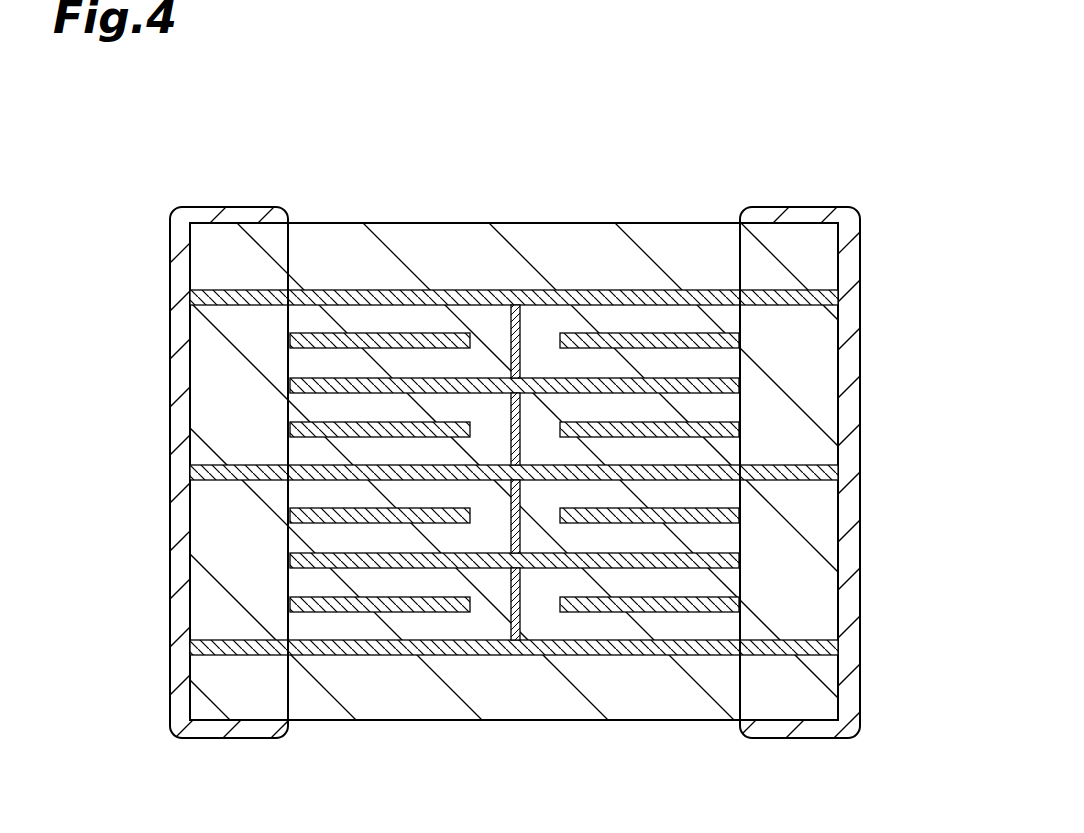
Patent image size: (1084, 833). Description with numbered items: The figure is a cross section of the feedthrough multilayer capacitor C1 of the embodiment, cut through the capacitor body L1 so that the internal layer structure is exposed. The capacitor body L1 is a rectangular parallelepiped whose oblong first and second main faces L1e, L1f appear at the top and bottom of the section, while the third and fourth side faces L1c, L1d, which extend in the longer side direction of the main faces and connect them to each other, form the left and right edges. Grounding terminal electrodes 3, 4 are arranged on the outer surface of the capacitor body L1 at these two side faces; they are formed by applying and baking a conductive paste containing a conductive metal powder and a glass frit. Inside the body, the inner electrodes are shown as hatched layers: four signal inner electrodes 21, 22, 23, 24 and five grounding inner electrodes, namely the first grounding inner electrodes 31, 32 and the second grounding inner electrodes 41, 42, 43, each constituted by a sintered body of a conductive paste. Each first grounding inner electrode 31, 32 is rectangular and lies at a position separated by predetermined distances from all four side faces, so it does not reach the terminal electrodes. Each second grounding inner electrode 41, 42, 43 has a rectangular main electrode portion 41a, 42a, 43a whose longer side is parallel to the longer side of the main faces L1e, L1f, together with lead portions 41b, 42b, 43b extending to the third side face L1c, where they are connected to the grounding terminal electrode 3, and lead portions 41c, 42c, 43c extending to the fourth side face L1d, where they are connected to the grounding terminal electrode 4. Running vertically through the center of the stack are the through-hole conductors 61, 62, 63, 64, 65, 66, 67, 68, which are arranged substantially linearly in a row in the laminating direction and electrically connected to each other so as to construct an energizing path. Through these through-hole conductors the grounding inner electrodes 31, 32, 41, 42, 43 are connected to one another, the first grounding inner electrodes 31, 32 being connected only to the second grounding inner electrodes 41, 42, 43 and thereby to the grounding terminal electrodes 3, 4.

The grounding terminal electrode 3 is at (232, 221).
The grounding terminal electrode 4 is at (815, 215).
The signal inner electrode 21 is at (308, 334).
The signal inner electrode 22 is at (308, 423).
The signal inner electrode 23 is at (308, 509).
The signal inner electrode 24 is at (308, 598).
The first grounding inner electrode 31 is at (308, 379).
The first grounding inner electrode 32 is at (308, 554).
The second grounding inner electrode 41 is at (512, 235).
The main electrode portion 41a is at (413, 291).
The lead portion 41b is at (225, 291).
The lead portion 41c is at (800, 291).
The second grounding inner electrode 42 is at (512, 323).
The main electrode portion 42a is at (366, 465).
The lead portion 42b is at (222, 466).
The lead portion 42c is at (800, 466).
The second grounding inner electrode 43 is at (512, 696).
The main electrode portion 43a is at (415, 656).
The lead portion 43b is at (222, 641).
The lead portion 43c is at (800, 641).
The through-hole conductor 61 is at (512, 318).
The through-hole conductor 62 is at (512, 360).
The through-hole conductor 63 is at (520, 407).
The through-hole conductor 64 is at (520, 450).
The through-hole conductor 65 is at (520, 497).
The through-hole conductor 66 is at (521, 540).
The through-hole conductor 67 is at (512, 585).
The through-hole conductor 68 is at (518, 618).
The capacitor body L1 is at (716, 222).
The third side face L1c is at (190, 690).
The fourth side face L1d is at (838, 692).
The first main face L1e is at (648, 222).
The second main face L1f is at (648, 722).
The feedthrough multilayer capacitor C1 is at (800, 113).